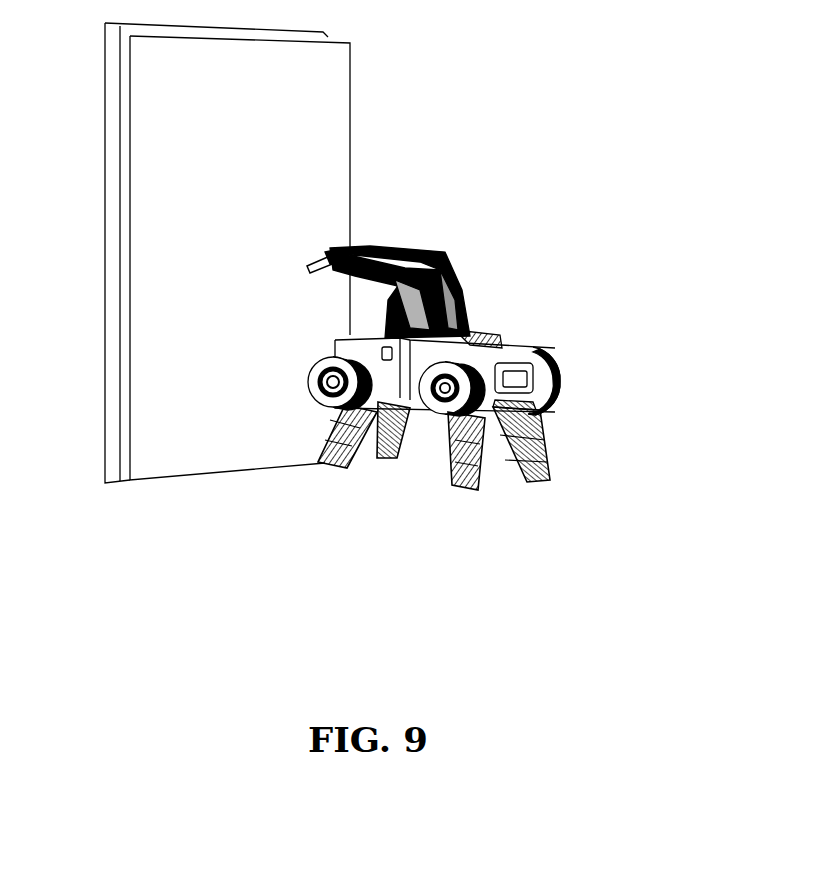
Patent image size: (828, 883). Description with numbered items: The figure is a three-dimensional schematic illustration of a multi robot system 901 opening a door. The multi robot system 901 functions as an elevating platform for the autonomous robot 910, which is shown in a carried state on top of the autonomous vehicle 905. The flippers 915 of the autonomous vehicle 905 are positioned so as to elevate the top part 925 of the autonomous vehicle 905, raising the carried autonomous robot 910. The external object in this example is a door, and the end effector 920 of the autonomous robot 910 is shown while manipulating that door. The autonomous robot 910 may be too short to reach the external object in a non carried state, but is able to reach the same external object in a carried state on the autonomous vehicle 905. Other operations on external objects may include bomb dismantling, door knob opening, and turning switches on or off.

The multi robot system 901 is at (150, 616).
The autonomous vehicle 905 is at (522, 342).
The autonomous robot 910 is at (443, 270).
The flippers 915 is at (550, 462).
The end effector 920 is at (312, 250).
The top part 925 is at (485, 326).